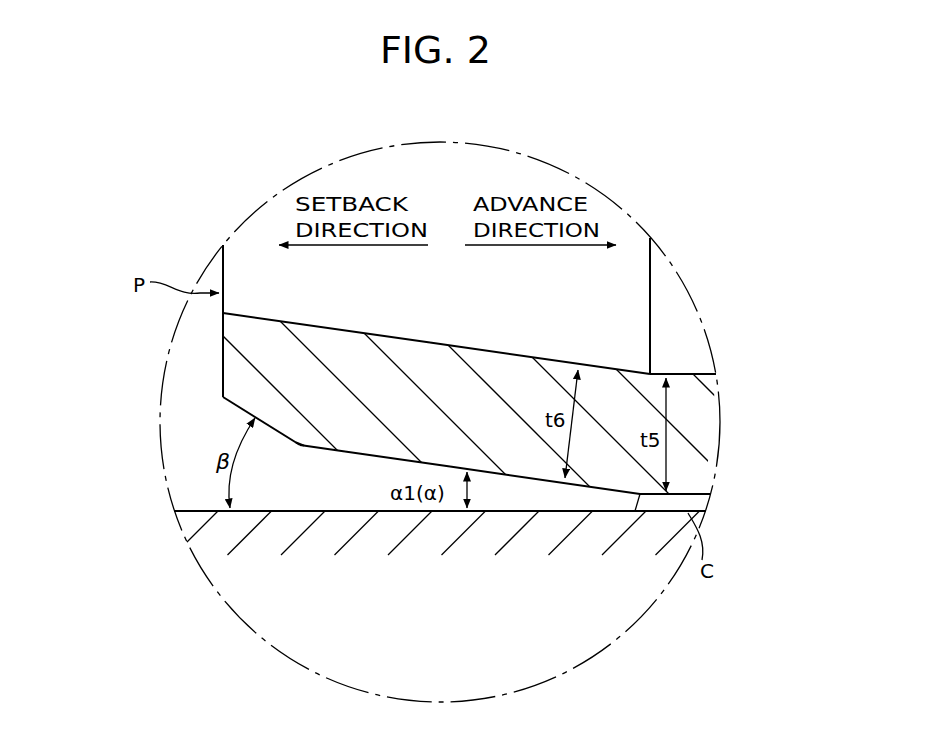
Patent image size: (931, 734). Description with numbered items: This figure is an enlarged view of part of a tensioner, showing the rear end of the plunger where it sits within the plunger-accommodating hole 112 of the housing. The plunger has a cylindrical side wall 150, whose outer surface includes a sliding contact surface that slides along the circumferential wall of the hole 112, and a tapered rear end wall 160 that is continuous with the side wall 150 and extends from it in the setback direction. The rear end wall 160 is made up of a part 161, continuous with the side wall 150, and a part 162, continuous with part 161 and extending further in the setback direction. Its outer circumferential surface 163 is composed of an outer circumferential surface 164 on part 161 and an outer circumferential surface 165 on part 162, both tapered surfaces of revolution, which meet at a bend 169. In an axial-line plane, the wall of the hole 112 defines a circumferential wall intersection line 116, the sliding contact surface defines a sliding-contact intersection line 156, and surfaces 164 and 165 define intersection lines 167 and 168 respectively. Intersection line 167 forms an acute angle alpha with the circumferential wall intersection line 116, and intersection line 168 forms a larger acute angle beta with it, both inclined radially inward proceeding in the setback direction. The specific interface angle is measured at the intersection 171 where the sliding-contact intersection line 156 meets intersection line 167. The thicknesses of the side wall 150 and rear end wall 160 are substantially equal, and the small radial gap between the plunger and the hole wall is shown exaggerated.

The plunger-accommodating hole 112 is at (193, 367).
The circumferential wall intersection line 116 is at (196, 511).
The side wall 150 is at (704, 424).
The sliding-contact intersection line 156 is at (702, 499).
The rear end wall 160 is at (436, 317).
The part of the rear end wall 161 is at (540, 335).
The part of the rear end wall 162 is at (281, 356).
The outer circumferential surface 163 is at (342, 530).
The outer circumferential surface 164 is at (357, 454).
The outer circumferential surface 165 is at (270, 427).
The intersection line 167 is at (517, 477).
The intersection line 168 is at (232, 414).
The bend 169 is at (300, 447).
The intersection 171 is at (640, 506).